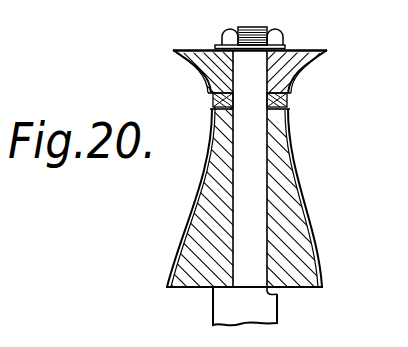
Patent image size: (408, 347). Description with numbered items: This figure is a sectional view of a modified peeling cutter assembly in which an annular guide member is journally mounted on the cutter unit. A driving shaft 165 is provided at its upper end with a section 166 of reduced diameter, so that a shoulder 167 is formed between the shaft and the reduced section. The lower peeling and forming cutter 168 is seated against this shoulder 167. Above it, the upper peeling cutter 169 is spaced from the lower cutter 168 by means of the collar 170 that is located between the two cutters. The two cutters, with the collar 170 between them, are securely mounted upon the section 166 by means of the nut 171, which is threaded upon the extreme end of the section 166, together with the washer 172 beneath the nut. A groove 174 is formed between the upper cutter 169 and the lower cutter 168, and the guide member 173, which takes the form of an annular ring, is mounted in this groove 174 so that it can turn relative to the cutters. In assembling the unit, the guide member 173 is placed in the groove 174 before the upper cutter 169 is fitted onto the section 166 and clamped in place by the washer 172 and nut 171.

The driving shaft 165 is at (213, 306).
The section of reduced diameter 166 is at (258, 240).
The shoulder 167 is at (279, 297).
The lower peeling and forming cutter 168 is at (282, 200).
The upper peeling cutter 169 is at (296, 62).
The collar 170 is at (268, 109).
The nut 171 is at (284, 33).
The washer 172 is at (286, 47).
The guide member 173 is at (288, 103).
The groove 174 is at (210, 92).